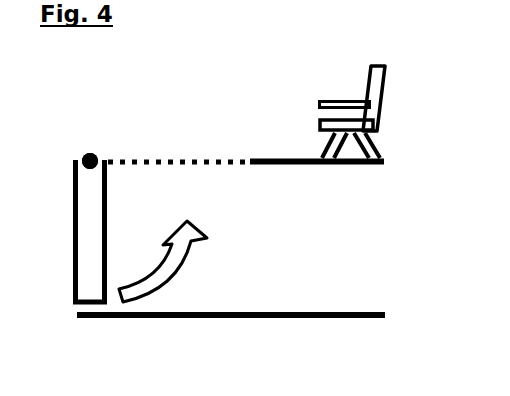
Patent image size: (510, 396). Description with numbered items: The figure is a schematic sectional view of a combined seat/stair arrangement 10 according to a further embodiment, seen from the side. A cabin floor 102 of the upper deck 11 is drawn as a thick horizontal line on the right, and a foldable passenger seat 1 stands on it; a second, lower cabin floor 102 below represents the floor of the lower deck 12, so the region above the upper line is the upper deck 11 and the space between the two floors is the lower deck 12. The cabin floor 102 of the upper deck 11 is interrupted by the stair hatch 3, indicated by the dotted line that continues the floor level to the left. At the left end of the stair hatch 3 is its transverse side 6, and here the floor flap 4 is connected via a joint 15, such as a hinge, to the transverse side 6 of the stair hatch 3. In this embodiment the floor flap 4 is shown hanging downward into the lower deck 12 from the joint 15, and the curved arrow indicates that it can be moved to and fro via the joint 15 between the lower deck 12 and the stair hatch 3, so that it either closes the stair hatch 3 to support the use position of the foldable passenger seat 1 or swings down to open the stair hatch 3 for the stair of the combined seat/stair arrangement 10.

The combined seat/stair arrangement 10 is at (66, 63).
The foldable passenger seat 1 is at (371, 64).
The stair hatch 3 is at (188, 148).
The floor flap 4 is at (73, 236).
The transverse side 6 is at (76, 158).
The joint 15 is at (98, 156).
The upper deck 11 is at (243, 137).
The lower deck 12 is at (337, 253).
The cabin floor 102 is at (350, 167).